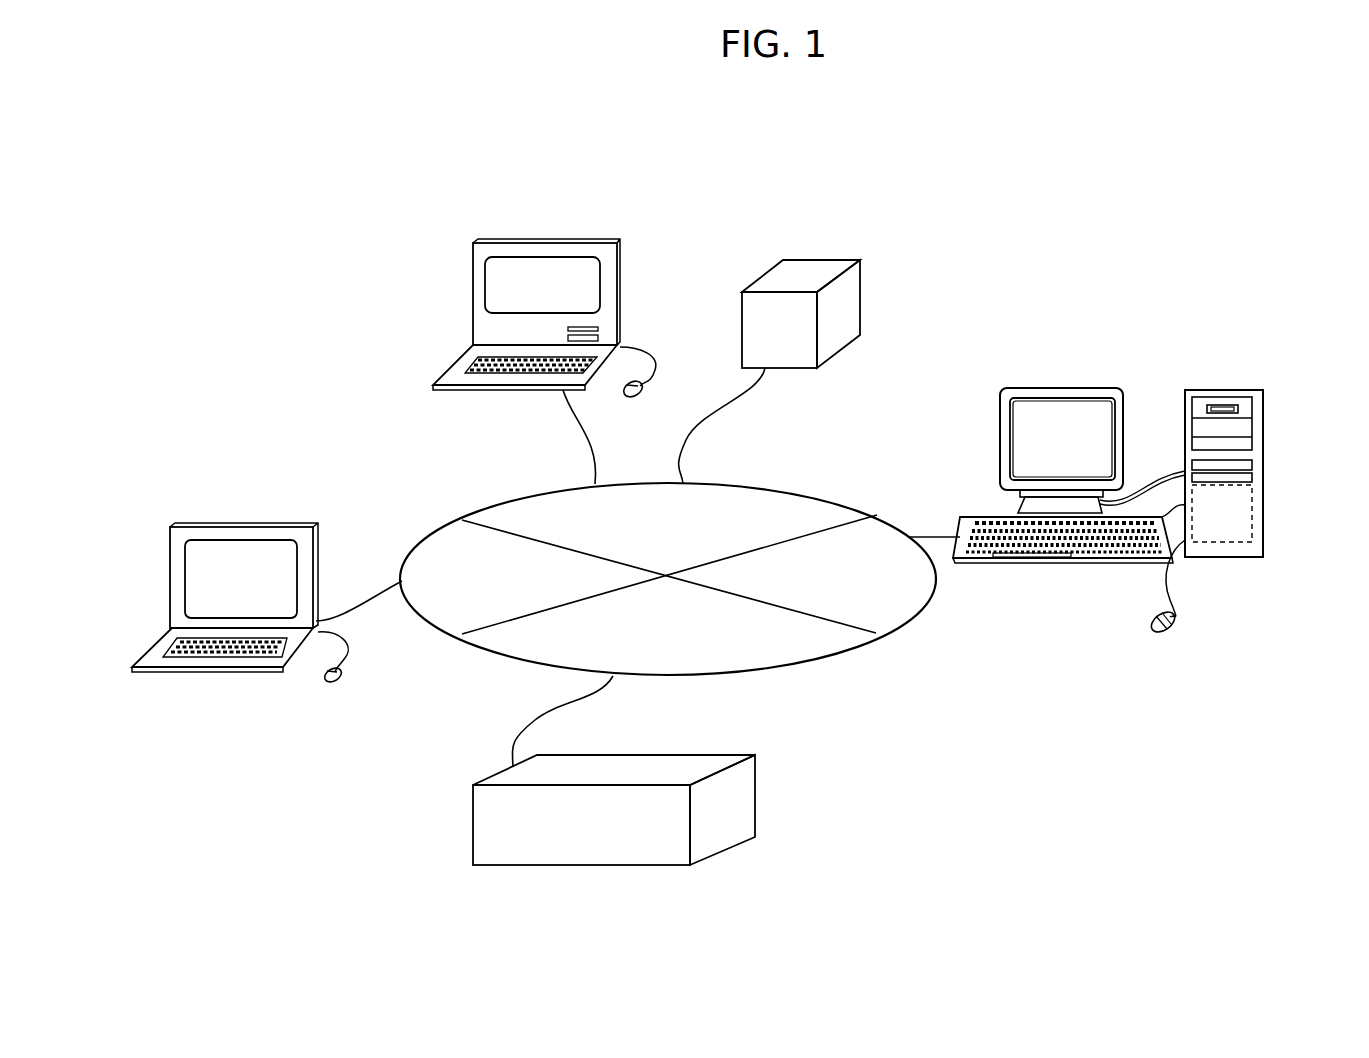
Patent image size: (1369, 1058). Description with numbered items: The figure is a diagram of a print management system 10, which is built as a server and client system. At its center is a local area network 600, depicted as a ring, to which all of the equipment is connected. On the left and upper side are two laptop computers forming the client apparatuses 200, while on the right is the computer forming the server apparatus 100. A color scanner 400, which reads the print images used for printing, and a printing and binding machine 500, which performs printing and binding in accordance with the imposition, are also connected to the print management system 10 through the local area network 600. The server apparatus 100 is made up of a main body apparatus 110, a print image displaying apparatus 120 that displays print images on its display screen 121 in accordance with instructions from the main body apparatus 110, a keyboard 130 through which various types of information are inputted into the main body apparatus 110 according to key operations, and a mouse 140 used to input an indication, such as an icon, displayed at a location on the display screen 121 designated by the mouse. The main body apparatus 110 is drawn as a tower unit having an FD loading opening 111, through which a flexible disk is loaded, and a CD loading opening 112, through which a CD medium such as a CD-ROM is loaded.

The print management system 10 is at (808, 146).
The server apparatus 100 is at (1210, 320).
The main body apparatus 110 is at (1228, 389).
The FD loading opening 111 is at (1252, 463).
The CD loading opening 112 is at (1253, 479).
The print image displaying apparatus 120 is at (1003, 425).
The display screen 121 is at (1027, 453).
The keyboard 130 is at (1098, 565).
The mouse 140 is at (1158, 632).
The client apparatuses 200 is at (435, 275).
The color scanner 400 is at (806, 270).
The printing and binding machine 500 is at (678, 752).
The local area network 600 is at (785, 487).